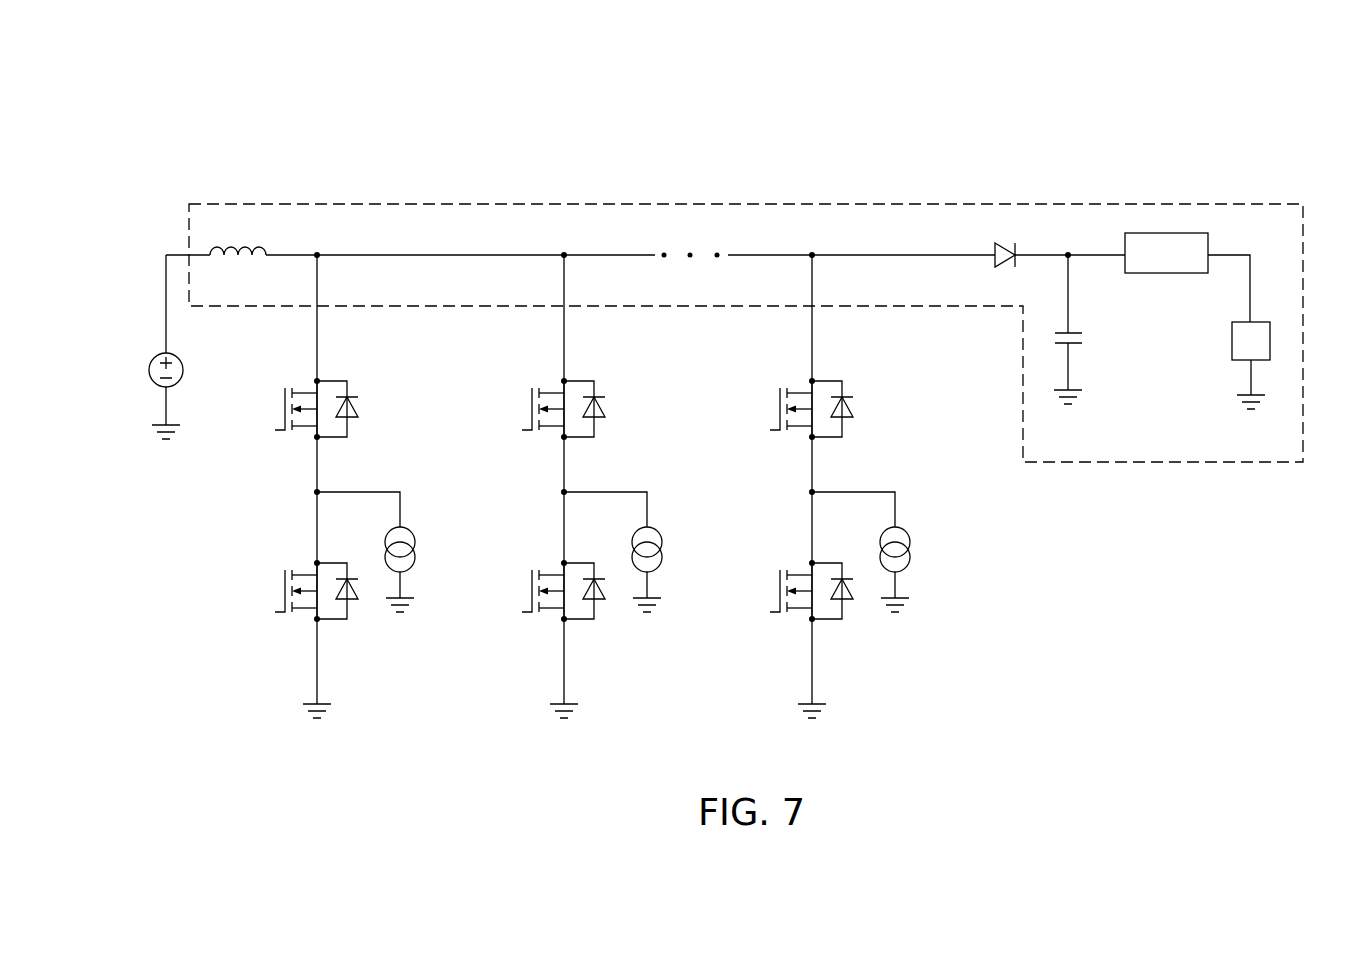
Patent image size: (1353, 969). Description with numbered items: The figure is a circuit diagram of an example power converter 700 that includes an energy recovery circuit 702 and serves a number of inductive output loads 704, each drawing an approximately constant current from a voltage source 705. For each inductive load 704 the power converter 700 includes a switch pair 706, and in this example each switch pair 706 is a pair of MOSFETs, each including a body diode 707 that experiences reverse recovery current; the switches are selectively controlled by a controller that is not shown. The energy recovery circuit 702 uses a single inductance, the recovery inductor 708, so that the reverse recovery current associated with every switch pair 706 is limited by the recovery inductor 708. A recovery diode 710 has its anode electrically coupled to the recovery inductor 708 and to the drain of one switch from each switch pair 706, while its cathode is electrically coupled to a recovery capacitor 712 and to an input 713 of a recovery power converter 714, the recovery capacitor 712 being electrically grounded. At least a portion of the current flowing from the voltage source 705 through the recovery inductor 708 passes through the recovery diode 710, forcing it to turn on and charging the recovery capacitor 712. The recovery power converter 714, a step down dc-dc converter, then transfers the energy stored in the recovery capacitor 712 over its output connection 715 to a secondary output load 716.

The power converter 700 is at (230, 140).
The energy recovery circuit 702 is at (530, 204).
The inductive output load 704 is at (416, 535).
The voltage source 705 is at (156, 358).
The switch pair 706 is at (273, 412).
The body diode 707 is at (365, 405).
The recovery inductor 708 is at (272, 241).
The recovery diode 710 is at (995, 231).
The recovery capacitor 712 is at (1045, 351).
The input 713 is at (1103, 241).
The recovery power converter 714 is at (1158, 273).
The output connection 715 is at (1232, 241).
The secondary output load 716 is at (1232, 347).